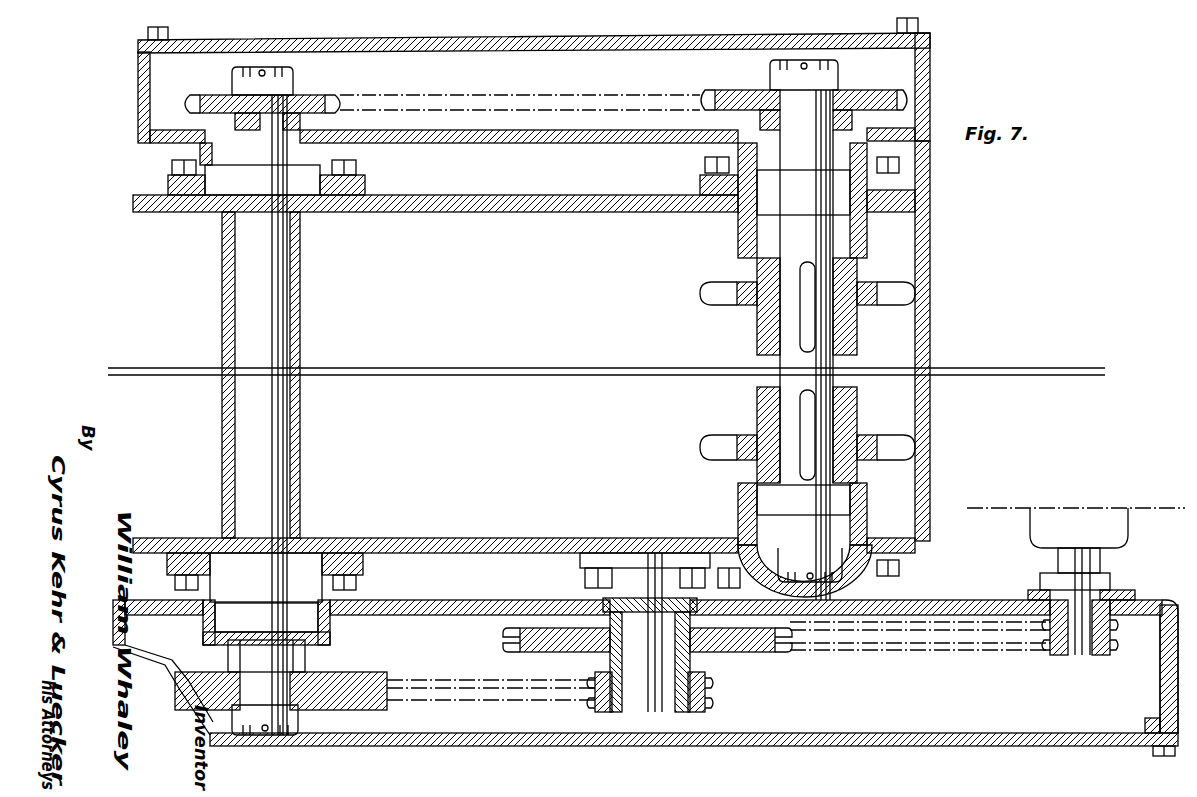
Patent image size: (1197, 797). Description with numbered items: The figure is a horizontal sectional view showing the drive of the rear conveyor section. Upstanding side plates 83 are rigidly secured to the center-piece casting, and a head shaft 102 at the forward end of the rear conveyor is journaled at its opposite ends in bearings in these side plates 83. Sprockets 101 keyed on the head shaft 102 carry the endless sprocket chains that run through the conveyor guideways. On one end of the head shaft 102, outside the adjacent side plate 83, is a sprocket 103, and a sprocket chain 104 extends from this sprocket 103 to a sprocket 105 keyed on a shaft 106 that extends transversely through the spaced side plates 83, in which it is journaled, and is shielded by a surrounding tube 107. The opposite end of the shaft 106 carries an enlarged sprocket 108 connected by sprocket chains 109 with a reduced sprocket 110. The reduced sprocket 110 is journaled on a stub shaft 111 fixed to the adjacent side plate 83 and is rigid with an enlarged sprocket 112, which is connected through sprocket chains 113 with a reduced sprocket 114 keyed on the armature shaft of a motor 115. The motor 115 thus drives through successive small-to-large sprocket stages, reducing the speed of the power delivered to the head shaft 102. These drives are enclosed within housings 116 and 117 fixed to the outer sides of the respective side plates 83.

The side plates 83 is at (540, 213).
The sprockets 101 is at (725, 440).
The head shaft 102 is at (835, 352).
The sprocket 103 is at (930, 93).
The sprocket chain 104 is at (490, 120).
The sprocket 105 is at (148, 103).
The shaft 106 is at (250, 330).
The tube 107 is at (300, 345).
The enlarged sprocket 108 is at (357, 709).
The sprocket chains 109 is at (542, 682).
The reduced sprocket 110 is at (705, 700).
The stub shaft 111 is at (650, 697).
The enlarged sprocket 112 is at (755, 655).
The sprocket chains 113 is at (1008, 640).
The reduced sprocket 114 is at (1115, 650).
The motor 115 is at (1030, 533).
The housing 116 is at (930, 42).
The housing 117 is at (942, 734).